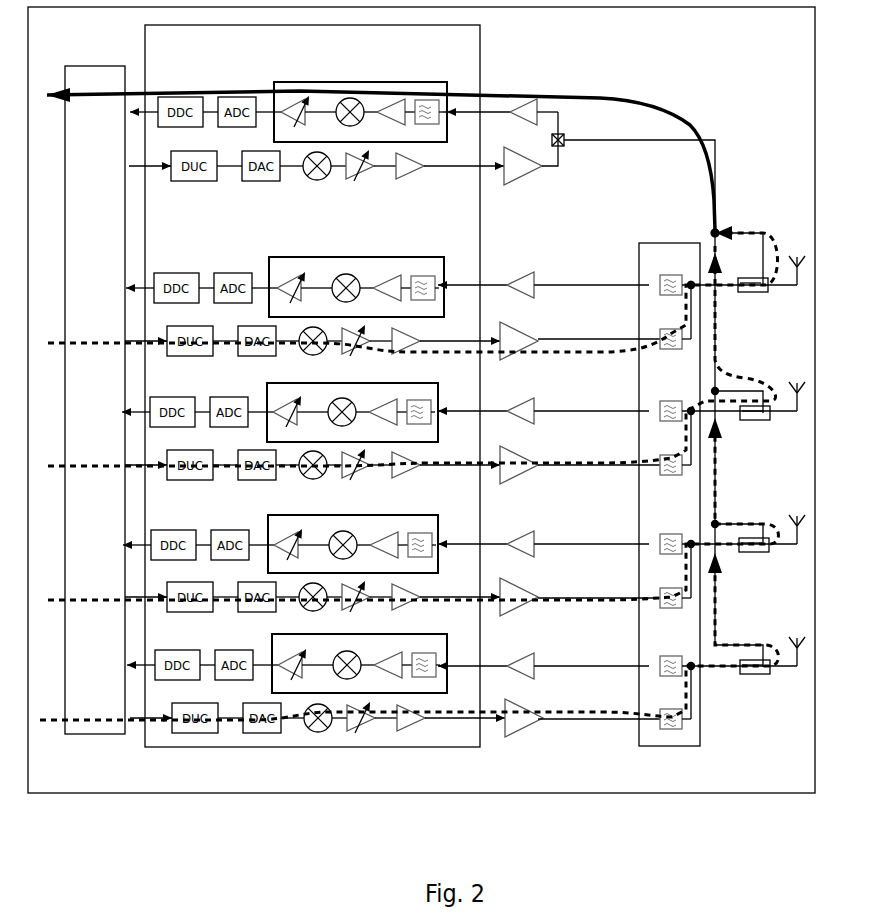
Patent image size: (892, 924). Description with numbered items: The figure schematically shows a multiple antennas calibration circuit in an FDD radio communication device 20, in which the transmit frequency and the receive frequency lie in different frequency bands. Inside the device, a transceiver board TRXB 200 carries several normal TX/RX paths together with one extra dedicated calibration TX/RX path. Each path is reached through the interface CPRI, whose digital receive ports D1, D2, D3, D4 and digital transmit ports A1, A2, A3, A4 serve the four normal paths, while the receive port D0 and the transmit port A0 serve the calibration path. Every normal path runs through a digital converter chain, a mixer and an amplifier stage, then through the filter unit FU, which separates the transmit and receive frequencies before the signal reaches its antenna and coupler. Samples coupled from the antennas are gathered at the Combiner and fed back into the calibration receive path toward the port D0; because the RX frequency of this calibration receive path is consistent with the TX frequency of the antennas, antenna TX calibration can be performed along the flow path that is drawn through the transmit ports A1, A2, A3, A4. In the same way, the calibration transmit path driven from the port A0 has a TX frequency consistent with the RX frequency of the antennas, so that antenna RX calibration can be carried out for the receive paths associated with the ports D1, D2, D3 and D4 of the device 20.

The FDD radio communication device 20 is at (421, 400).
The TRXB 200 is at (312, 386).
The CPRI interface CPRI is at (95, 400).
The filter unit FU is at (669, 494).
The combiner Combiner is at (710, 224).
The calibration digital receive port D0 is at (131, 112).
The calibration digital transmit port A0 is at (137, 166).
The first digital receive port D1 is at (130, 288).
The first digital transmit port A1 is at (136, 342).
The second digital receive port D2 is at (127, 413).
The second digital transmit port A2 is at (136, 466).
The third digital receive port D3 is at (128, 546).
The third digital transmit port A3 is at (136, 598).
The fourth digital receive port D4 is at (130, 666).
The fourth digital transmit port A4 is at (138, 719).